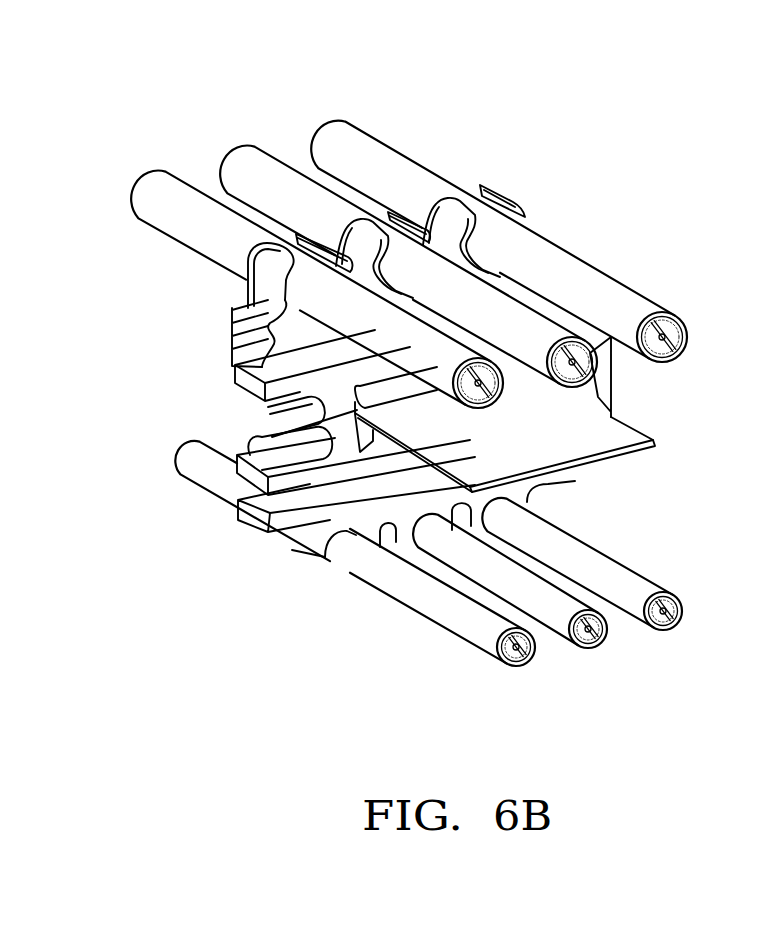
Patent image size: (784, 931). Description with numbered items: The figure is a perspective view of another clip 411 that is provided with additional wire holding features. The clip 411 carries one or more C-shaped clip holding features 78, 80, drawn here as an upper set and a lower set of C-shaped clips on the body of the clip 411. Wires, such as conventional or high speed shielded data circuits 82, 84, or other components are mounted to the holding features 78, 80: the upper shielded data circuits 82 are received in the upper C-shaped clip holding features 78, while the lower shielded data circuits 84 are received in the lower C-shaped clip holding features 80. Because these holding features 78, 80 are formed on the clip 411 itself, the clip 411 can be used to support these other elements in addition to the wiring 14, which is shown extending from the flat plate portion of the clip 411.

The clip 411 is at (642, 234).
The shielded data circuit 82 is at (160, 203).
The C-shaped clip holding feature 78 is at (357, 240).
The wiring 14 is at (610, 430).
The C-shaped clip holding feature 80 is at (403, 533).
The shielded data circuit 84 is at (615, 625).